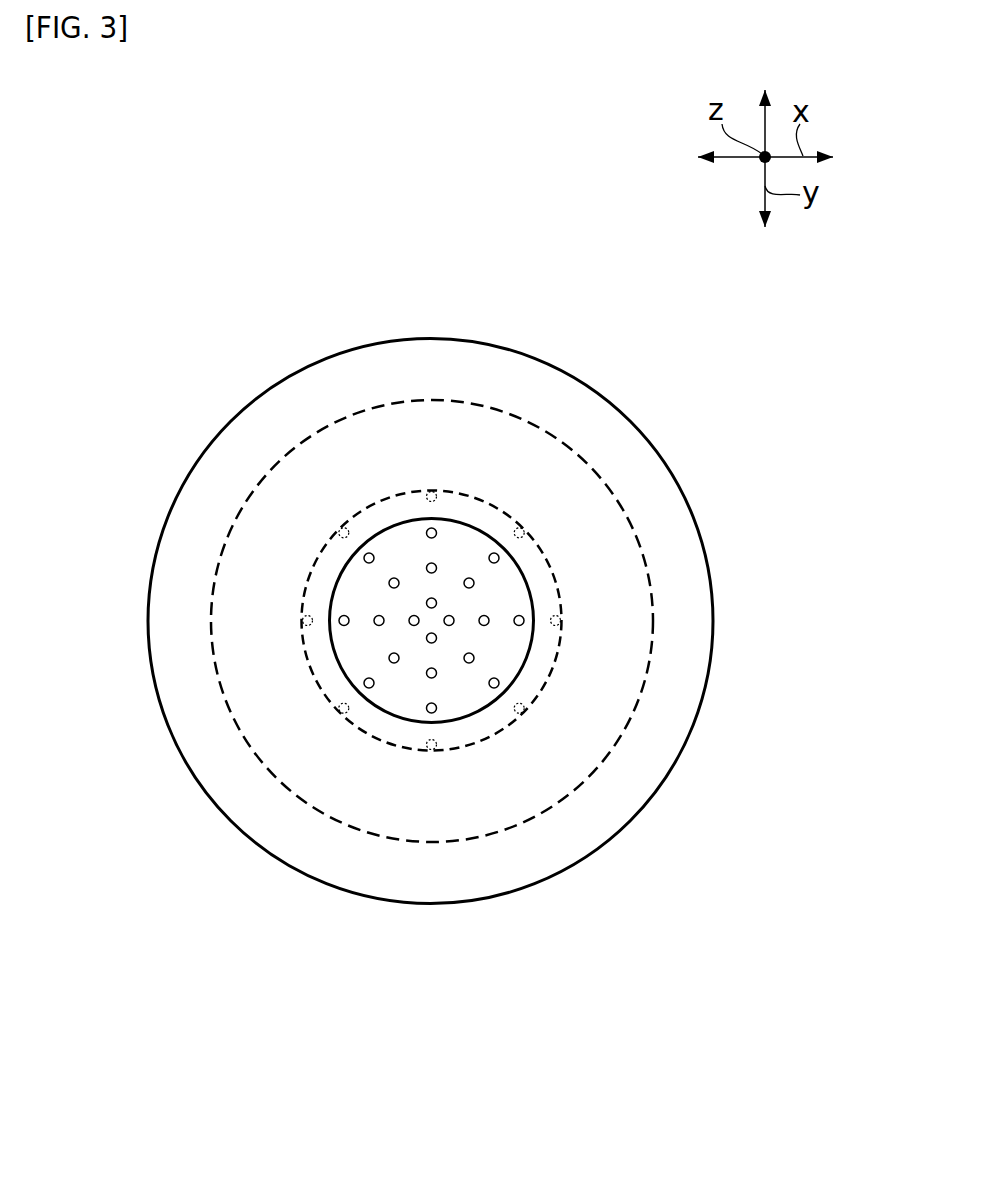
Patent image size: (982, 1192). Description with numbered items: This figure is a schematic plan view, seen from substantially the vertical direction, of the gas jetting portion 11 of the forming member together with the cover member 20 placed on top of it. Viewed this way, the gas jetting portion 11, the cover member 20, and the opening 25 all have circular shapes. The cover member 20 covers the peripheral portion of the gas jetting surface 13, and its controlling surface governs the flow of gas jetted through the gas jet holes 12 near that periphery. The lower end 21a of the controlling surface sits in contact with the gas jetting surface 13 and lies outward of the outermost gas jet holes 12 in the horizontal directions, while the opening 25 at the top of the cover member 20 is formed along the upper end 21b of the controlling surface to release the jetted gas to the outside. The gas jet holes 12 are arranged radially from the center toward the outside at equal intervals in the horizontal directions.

The cover member 20 is at (723, 550).
The gas jetting portion 11 is at (313, 808).
The lower end of the controlling surface 21a is at (553, 670).
The upper end of the controlling surface 21b is at (486, 532).
The gas jet holes 12 is at (413, 622).
The gas jetting surface 13 is at (348, 587).
The opening 25 is at (503, 652).